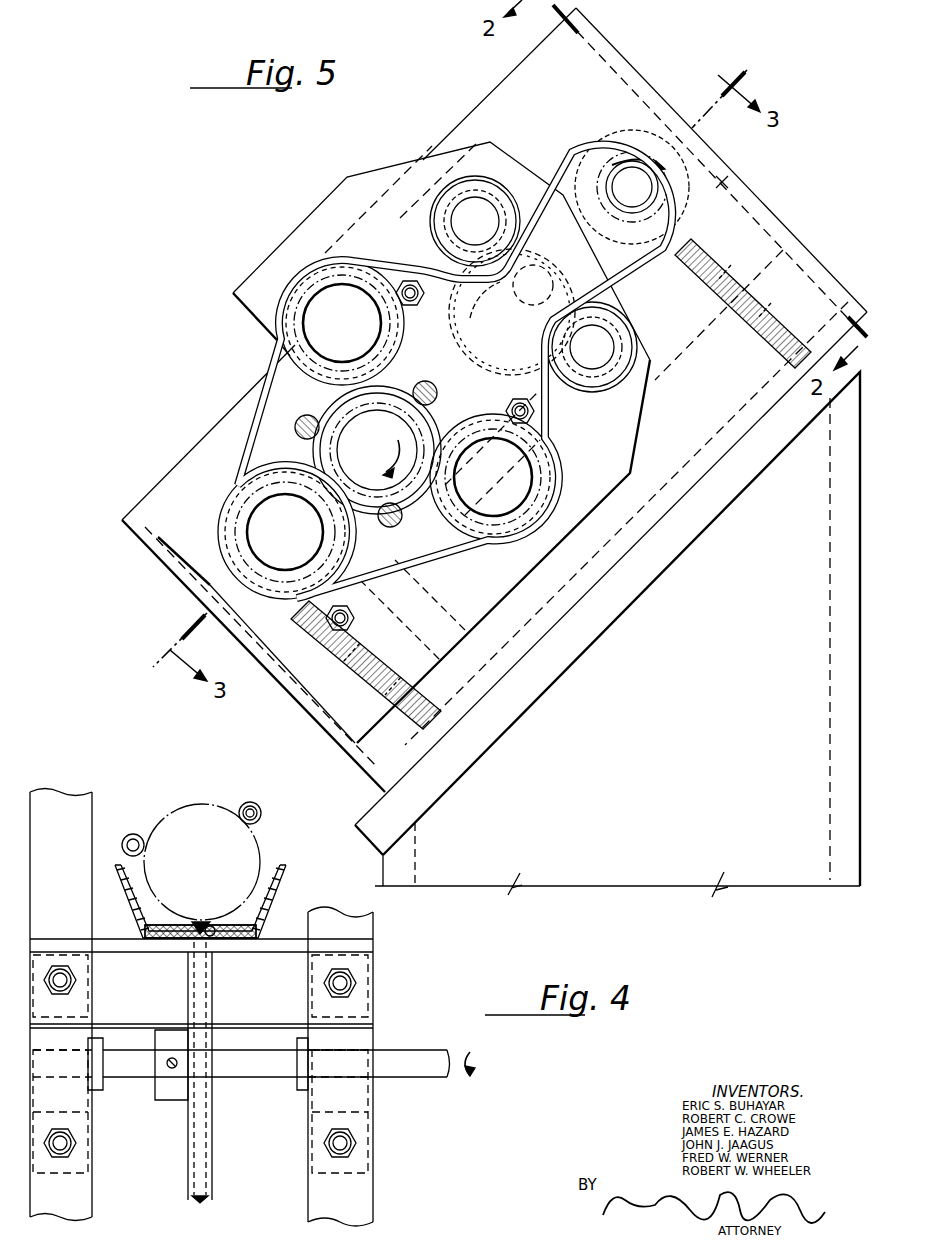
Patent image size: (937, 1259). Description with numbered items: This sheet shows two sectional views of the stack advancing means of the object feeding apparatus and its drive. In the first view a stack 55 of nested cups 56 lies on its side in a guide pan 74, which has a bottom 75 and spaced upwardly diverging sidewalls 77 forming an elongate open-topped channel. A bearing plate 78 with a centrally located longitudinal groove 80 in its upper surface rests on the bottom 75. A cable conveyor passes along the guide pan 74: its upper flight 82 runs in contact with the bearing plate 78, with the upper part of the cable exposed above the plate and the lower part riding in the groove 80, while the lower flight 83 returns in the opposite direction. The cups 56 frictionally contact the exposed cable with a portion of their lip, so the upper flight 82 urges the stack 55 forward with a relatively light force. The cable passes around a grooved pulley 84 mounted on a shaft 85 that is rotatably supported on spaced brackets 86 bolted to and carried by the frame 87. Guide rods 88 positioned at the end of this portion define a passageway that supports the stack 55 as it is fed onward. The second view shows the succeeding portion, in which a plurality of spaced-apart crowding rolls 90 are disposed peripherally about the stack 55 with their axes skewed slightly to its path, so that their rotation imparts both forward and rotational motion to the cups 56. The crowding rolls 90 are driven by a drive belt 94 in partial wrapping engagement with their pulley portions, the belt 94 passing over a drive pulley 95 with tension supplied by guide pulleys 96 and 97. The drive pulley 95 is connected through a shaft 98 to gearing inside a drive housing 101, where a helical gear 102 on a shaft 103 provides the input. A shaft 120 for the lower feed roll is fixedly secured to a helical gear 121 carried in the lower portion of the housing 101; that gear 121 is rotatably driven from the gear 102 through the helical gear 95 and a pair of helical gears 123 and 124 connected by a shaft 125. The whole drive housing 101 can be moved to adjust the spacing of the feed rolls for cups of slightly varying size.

In FIG. 4, the stack 55 is at (205, 804).
In FIG. 5, the cups 56 is at (412, 509).
In FIG. 4, the guide pan 74 is at (289, 879).
In FIG. 4, the bottom 75 is at (175, 945).
In FIG. 4, the sidewall 77 is at (130, 907).
In FIG. 4, the bearing plate 78 is at (240, 945).
In FIG. 4, the longitudinal groove 80 is at (197, 923).
In FIG. 4, the upper flight 82 is at (203, 922).
In FIG. 4, the lower flight 83 is at (206, 1202).
In FIG. 4, the grooved pulley 84 is at (212, 1140).
In FIG. 4, the shaft 85 is at (137, 1070).
In FIG. 4, the brackets 86 is at (350, 1012).
In FIG. 4, the frame 87 is at (94, 800).
In FIG. 5, the guide rods 88 is at (432, 384).
In FIG. 4, the guide rods 88 is at (137, 834).
In FIG. 5, the crowding rolls 90 is at (275, 302).
In FIG. 5, the drive belt 94 is at (647, 258).
In FIG. 5, the drive pulley 95 is at (736, 174).
In FIG. 5, the guide pulley 96 is at (454, 195).
In FIG. 5, the guide pulley 97 is at (622, 368).
In FIG. 5, the shaft 98 is at (622, 172).
In FIG. 5, the drive housing 101 is at (777, 224).
In FIG. 5, the gear 102 is at (522, 180).
In FIG. 5, the shaft 103 is at (569, 254).
In FIG. 5, the shaft 120 is at (303, 526).
In FIG. 5, the helical gear 121 is at (167, 569).
In FIG. 5, the helical gear 123 is at (821, 270).
In FIG. 5, the helical gear 124 is at (376, 665).
In FIG. 5, the shaft 125 is at (717, 322).